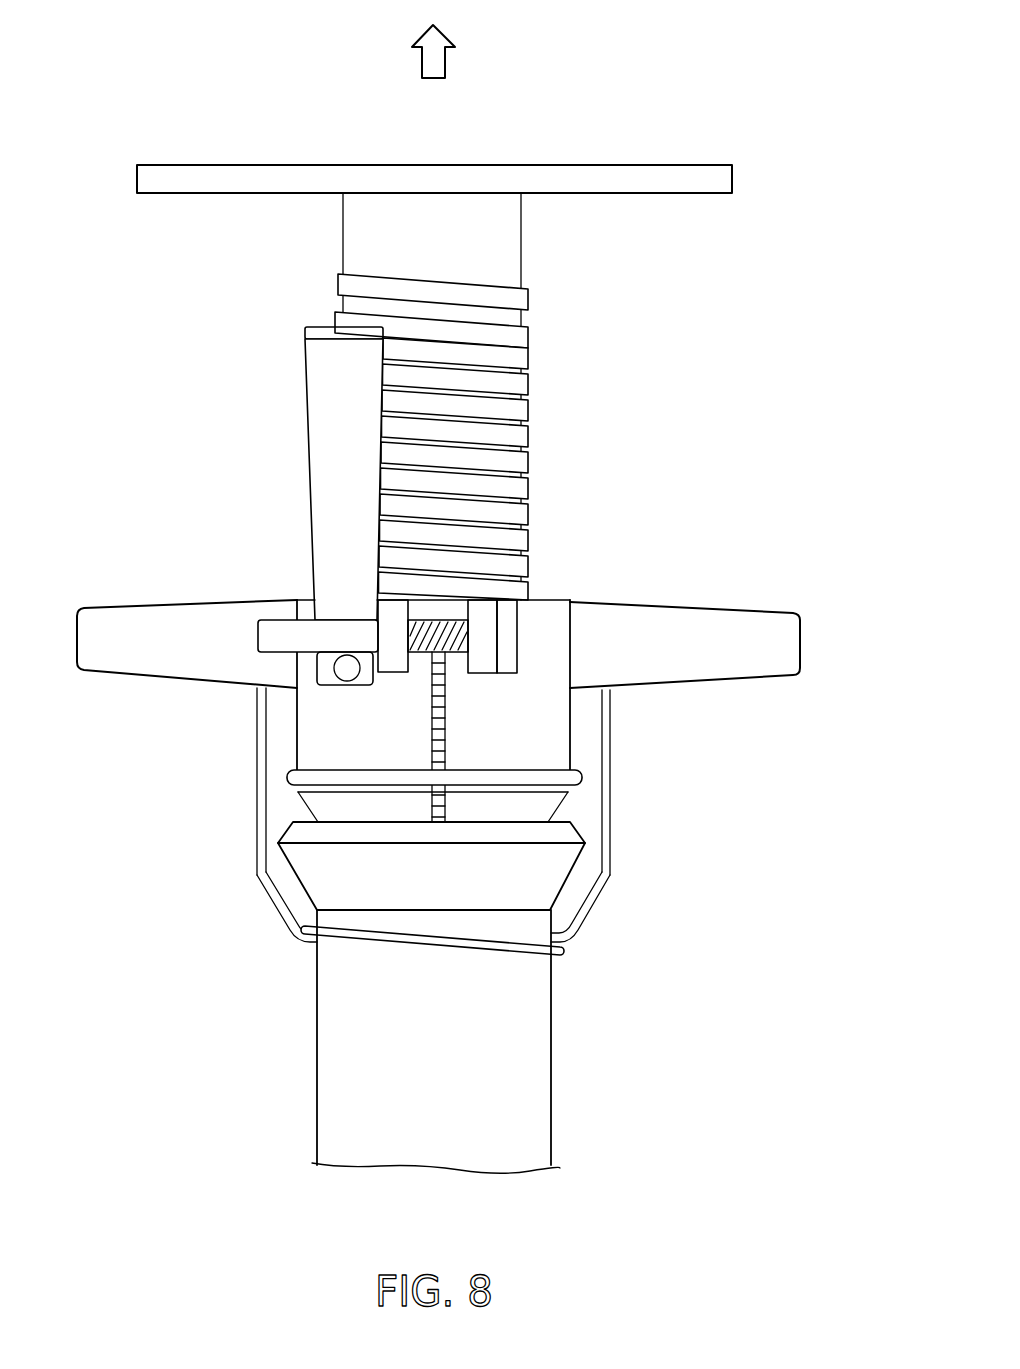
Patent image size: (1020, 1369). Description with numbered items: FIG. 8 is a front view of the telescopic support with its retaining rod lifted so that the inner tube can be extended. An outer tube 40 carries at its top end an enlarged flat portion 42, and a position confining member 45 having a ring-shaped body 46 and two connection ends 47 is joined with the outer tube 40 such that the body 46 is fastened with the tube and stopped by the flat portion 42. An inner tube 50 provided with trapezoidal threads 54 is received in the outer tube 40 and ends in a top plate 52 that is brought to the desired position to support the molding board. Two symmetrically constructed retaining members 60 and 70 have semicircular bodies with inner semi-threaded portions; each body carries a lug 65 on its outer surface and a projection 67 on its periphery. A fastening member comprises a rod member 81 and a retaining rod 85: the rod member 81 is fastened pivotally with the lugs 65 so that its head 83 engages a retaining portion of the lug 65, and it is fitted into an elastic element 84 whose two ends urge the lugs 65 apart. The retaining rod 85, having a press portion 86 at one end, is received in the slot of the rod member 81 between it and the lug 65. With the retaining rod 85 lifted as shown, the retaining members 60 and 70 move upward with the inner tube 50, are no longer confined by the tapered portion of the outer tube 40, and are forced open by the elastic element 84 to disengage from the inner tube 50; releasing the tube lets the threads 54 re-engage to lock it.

The outer tube 40 is at (590, 1003).
The enlarged flat portion 42 is at (555, 872).
The position confining member 45 is at (250, 908).
The ring-shaped body 46 is at (288, 940).
The connection ends 47 is at (610, 800).
The inner tube 50 is at (493, 396).
The top plate 52 is at (692, 177).
The trapezoidal threads 54 is at (492, 497).
The retaining member 60 is at (534, 726).
The lug 65 is at (487, 612).
The projection 67 is at (287, 779).
The retaining member 70 is at (326, 729).
The rod member 81 is at (283, 632).
The head 83 is at (510, 643).
The elastic element 84 is at (450, 613).
The retaining rod 85 is at (323, 433).
The press portion 86 is at (325, 330).